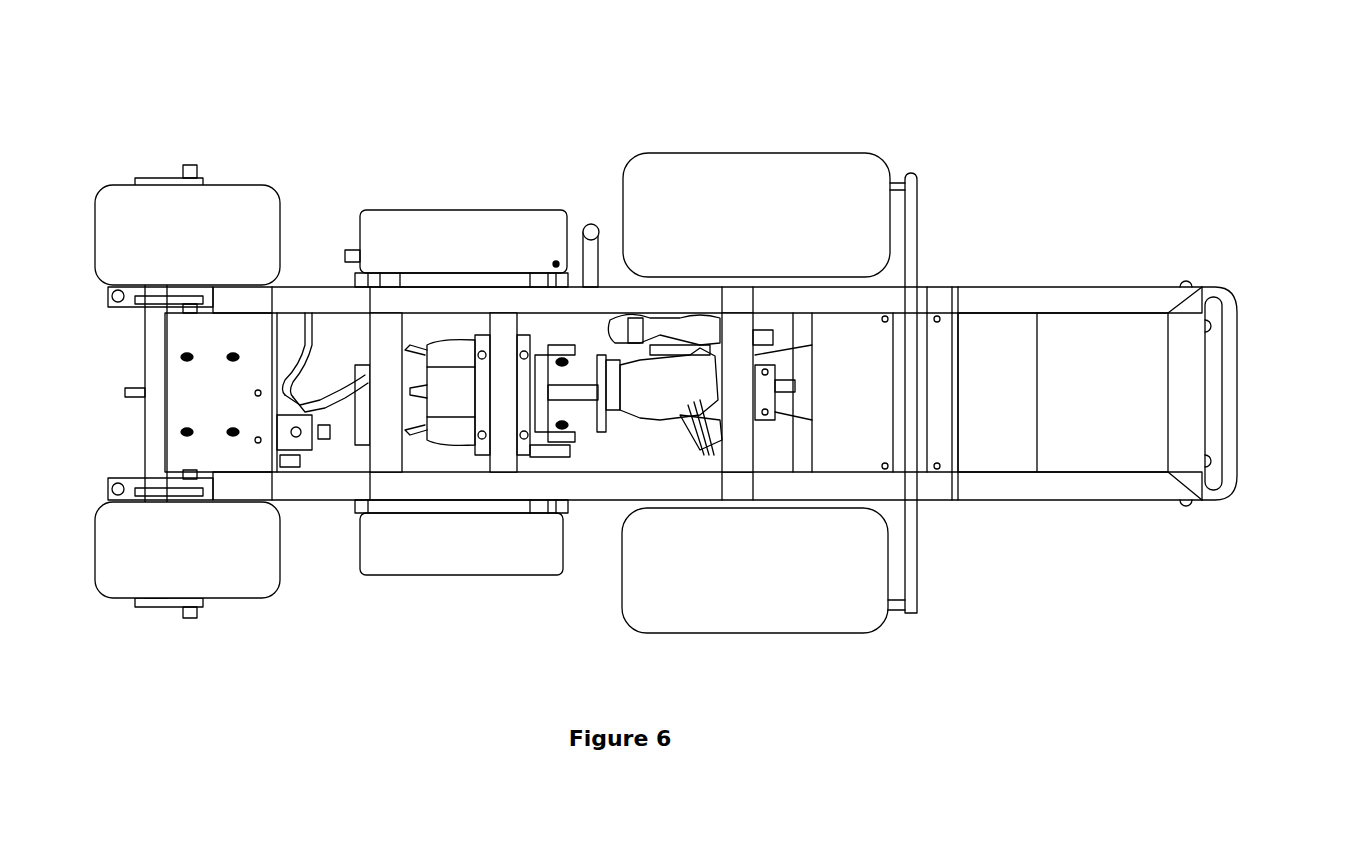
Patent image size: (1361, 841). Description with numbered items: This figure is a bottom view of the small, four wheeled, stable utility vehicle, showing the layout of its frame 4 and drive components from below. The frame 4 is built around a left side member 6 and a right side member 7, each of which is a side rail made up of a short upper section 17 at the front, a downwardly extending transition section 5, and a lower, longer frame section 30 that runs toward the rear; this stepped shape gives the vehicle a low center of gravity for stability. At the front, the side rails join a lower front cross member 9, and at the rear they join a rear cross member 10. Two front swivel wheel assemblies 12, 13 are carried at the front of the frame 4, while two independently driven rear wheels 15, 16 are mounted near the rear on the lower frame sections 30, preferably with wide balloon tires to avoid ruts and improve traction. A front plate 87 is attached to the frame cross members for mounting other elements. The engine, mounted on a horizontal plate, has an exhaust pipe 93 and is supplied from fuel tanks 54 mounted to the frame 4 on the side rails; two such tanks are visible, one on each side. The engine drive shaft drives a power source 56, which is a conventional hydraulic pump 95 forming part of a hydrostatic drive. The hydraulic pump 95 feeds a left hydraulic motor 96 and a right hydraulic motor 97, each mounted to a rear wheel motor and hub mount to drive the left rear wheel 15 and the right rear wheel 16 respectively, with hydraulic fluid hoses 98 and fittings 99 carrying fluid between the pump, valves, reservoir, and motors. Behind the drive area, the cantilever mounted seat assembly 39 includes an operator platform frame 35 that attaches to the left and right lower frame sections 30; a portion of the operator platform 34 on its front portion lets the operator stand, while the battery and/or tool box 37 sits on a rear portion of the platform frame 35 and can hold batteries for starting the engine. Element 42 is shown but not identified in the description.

The frame 4 is at (928, 286).
The transition section 5 is at (297, 312).
The left side member 6 is at (330, 286).
The right side member 7 is at (595, 501).
The lower front cross member 9 is at (148, 374).
The rear cross member 10 is at (918, 413).
The front swivel wheel assembly 12 is at (230, 599).
The front swivel wheel assembly 13 is at (230, 184).
The rear wheel 15 is at (820, 153).
The rear wheel 16 is at (818, 633).
The short upper section 17 is at (145, 310).
The lower frame section 30 is at (674, 312).
The operator platform 34 is at (966, 395).
The operator platform frame 35 is at (1075, 300).
The battery and/or tool box 37 is at (1091, 395).
The seat assembly 39 is at (1239, 378).
The side bar 42 is at (908, 615).
The fuel tank 54 is at (446, 249).
The power source 56 is at (643, 362).
The front plate 87 is at (234, 355).
The exhaust pipe 93 is at (586, 225).
The hydraulic pump 95 is at (641, 408).
The hydraulic motor 96 is at (773, 340).
The hydraulic motor 97 is at (773, 452).
The hydraulic fluid hose 98 is at (707, 412).
The fitting 99 is at (708, 430).